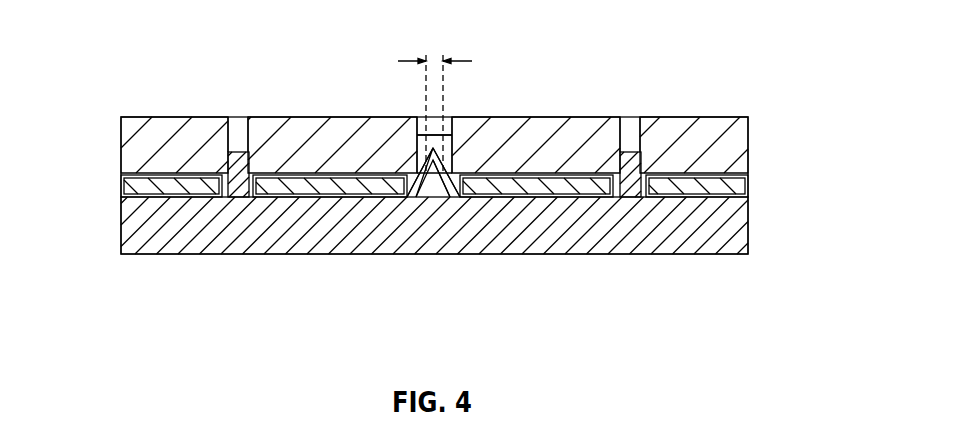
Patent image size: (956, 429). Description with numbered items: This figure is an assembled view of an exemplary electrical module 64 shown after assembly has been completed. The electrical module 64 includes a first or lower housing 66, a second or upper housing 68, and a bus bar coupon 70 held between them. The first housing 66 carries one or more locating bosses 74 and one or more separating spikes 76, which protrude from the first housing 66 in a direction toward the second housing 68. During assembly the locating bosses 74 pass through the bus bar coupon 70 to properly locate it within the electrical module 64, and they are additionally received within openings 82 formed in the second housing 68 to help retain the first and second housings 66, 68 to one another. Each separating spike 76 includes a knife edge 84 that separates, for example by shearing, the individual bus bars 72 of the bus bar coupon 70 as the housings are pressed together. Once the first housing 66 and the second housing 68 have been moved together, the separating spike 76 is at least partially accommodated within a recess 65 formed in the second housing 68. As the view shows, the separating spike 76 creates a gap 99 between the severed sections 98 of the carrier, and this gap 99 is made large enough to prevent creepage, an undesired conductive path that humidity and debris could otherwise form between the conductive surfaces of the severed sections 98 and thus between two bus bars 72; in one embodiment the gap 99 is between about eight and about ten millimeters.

The electrical module 64 is at (118, 72).
The recess 65 is at (443, 141).
The first housing 66 is at (728, 233).
The second housing 68 is at (700, 138).
The bus bar coupon 70 is at (758, 179).
The bus bars 72 is at (312, 195).
The locating bosses 74 is at (240, 150).
The separating spikes 76 is at (430, 197).
The openings 82 is at (235, 150).
The knife edge 84 is at (450, 165).
The severed sections 98 is at (413, 180).
The gap 99 is at (438, 59).